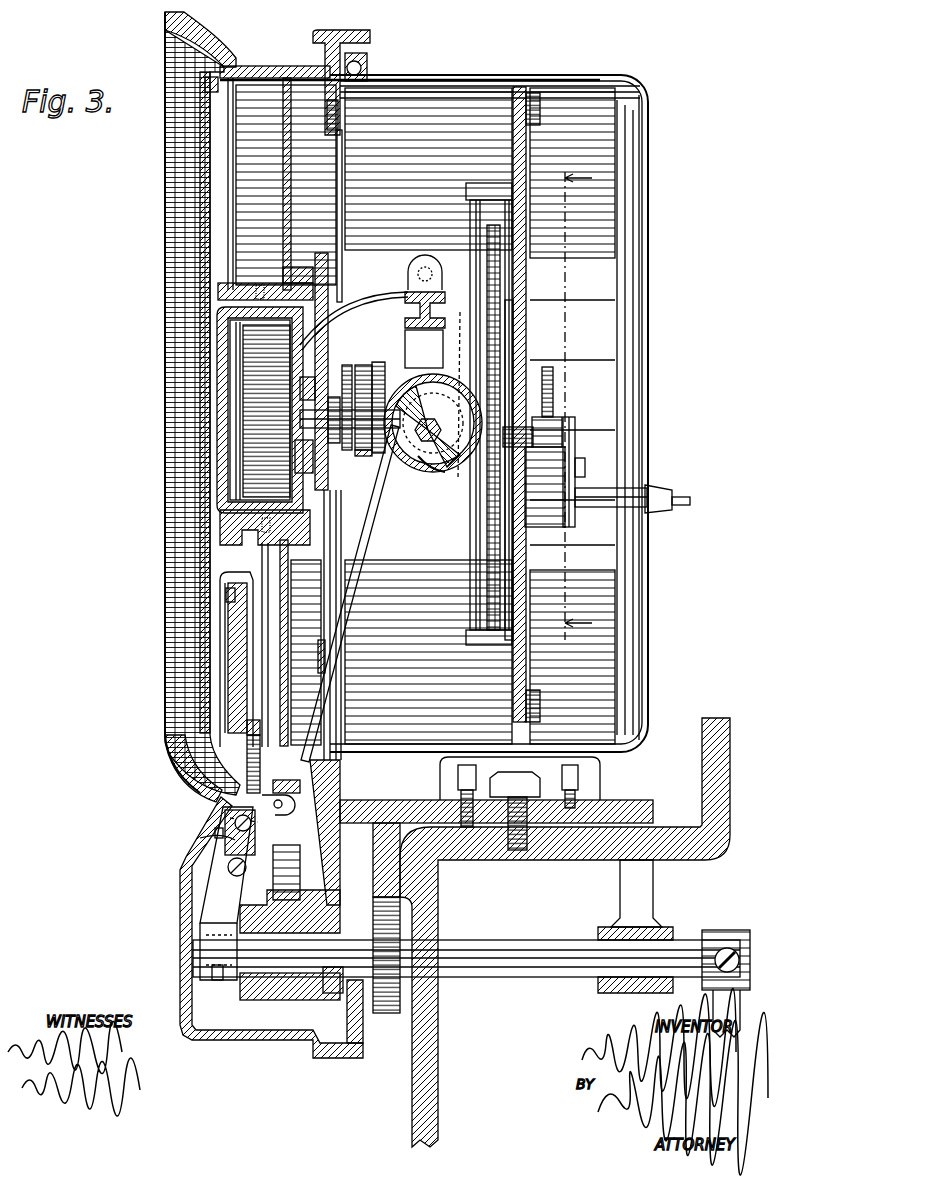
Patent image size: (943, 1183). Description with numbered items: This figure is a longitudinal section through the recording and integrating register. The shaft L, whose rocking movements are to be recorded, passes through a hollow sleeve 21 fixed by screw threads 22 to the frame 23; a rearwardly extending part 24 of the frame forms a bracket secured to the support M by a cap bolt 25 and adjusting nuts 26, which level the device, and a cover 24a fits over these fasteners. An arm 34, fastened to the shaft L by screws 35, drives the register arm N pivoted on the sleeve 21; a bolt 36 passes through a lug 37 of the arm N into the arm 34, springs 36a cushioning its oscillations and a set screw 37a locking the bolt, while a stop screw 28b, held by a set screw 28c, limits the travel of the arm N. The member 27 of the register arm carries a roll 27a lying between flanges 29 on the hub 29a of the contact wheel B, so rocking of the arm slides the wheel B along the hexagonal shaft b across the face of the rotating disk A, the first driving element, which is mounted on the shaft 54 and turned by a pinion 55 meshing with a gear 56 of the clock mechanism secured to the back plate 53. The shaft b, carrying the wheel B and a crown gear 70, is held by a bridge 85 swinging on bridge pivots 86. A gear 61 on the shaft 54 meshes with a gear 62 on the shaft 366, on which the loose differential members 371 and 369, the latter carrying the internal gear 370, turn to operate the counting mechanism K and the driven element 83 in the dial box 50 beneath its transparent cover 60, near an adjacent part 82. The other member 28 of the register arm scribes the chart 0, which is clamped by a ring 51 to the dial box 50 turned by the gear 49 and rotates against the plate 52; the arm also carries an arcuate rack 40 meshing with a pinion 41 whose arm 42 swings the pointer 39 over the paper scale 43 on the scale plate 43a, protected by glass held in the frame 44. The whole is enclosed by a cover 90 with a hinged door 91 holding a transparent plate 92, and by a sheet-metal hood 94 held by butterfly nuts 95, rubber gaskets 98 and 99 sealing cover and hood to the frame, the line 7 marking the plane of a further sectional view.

The ring or door 91 is at (192, 50).
The transparent protecting plate 92 is at (170, 163).
The cover 90 is at (272, 66).
The rubber gasket 98 is at (320, 44).
The rubber gasket 99 is at (372, 60).
The hood 94 is at (550, 68).
The section line 7 is at (570, 400).
The chart 0 is at (283, 258).
The plate 52 is at (342, 160).
The frame member 23 is at (342, 188).
The ring 51 is at (215, 285).
The transparent cover 60 is at (222, 372).
The registering or counting means K is at (300, 420).
The dial box 50 is at (273, 325).
The third or driven element 83 is at (313, 408).
The shaft 82 is at (347, 455).
The gear 369 is at (348, 362).
The second gear member 371 is at (362, 362).
The roll 27a is at (386, 354).
The internal gear member 370 is at (363, 456).
The second driving element B is at (433, 423).
The shaft b is at (437, 425).
The shaft 366 is at (420, 378).
The bridge 85 is at (412, 292).
The bridge pivots 86 is at (425, 267).
The gear 49 is at (331, 268).
The crown gear 70 is at (450, 540).
The flanges 29 is at (430, 474).
The hub 29a is at (450, 478).
The member of register arm 27 is at (372, 545).
The back plate 53 is at (528, 340).
The first driving element A is at (506, 600).
The coacting gear 62 is at (512, 378).
The shaft 54 is at (530, 428).
The gear 56 is at (555, 392).
The pinion 55 is at (556, 428).
The gear 61 is at (576, 452).
The butterfly nuts 95 is at (682, 494).
The member of register arm 28 is at (262, 556).
The frame 44 is at (222, 583).
The indicating pointer 39 is at (228, 595).
The sheet of paper 43 is at (232, 645).
The scale plate 43a is at (226, 672).
The arm 42 is at (250, 716).
The arcuate rack 40 is at (248, 740).
The pinion 41 is at (200, 795).
The stop screw 28b is at (262, 802).
The set screw 28c is at (228, 820).
The set screw 37a is at (215, 834).
The lug 37 is at (236, 846).
The bolt 36 is at (230, 865).
The springs 36a is at (200, 840).
The arm 34 is at (215, 890).
The screws 35 is at (212, 975).
The register arm N is at (284, 840).
The hollow sleeve 21 is at (246, 1002).
The screw threads 22 is at (322, 1000).
The shaft L is at (537, 966).
The support M is at (588, 861).
The rearwardly extending part 24 is at (398, 800).
The cover 24a is at (600, 792).
The adjusting nuts 26 is at (580, 778).
The cap bolt 25 is at (516, 850).